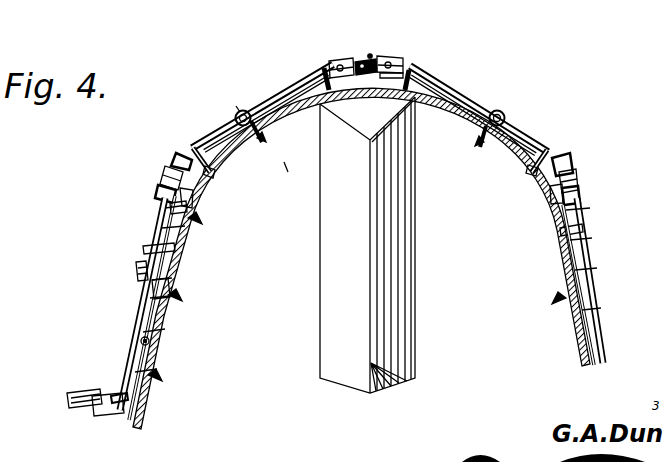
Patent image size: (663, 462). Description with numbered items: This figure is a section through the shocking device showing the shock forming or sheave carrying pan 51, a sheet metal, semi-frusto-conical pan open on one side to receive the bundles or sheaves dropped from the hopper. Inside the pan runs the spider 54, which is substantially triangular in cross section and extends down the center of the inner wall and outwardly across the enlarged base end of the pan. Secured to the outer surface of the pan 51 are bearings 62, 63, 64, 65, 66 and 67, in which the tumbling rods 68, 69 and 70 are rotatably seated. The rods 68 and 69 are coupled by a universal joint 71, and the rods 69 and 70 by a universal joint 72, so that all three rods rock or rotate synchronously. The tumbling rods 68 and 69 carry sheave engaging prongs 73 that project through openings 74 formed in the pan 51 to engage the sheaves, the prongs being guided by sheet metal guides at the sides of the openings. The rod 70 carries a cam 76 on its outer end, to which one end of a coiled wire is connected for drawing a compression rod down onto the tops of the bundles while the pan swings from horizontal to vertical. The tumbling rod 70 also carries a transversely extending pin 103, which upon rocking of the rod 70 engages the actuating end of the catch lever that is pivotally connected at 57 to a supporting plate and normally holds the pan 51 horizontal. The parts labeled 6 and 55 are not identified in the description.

The cable 6 is at (286, 167).
The shock forming or sheave carrying pan 51 is at (580, 231).
The spider 54 is at (399, 122).
The central post 55 is at (322, 355).
The pivotal connection 57 is at (136, 270).
The bearing 62 is at (548, 152).
The bearing 63 is at (420, 70).
The bearing 64 is at (324, 66).
The bearing 65 is at (190, 148).
The bearing 66 is at (145, 248).
The bearing 67 is at (118, 396).
The tumbling rod 68 is at (490, 110).
The tumbling rod 69 is at (246, 111).
The tumbling rod 70 is at (150, 322).
The universal joint 71 is at (370, 55).
The universal joint 72 is at (166, 170).
The sheave engaging prong 73 is at (266, 142).
The opening 74 is at (263, 152).
The cam 76 is at (98, 414).
The transversely extending pin 103 is at (151, 341).